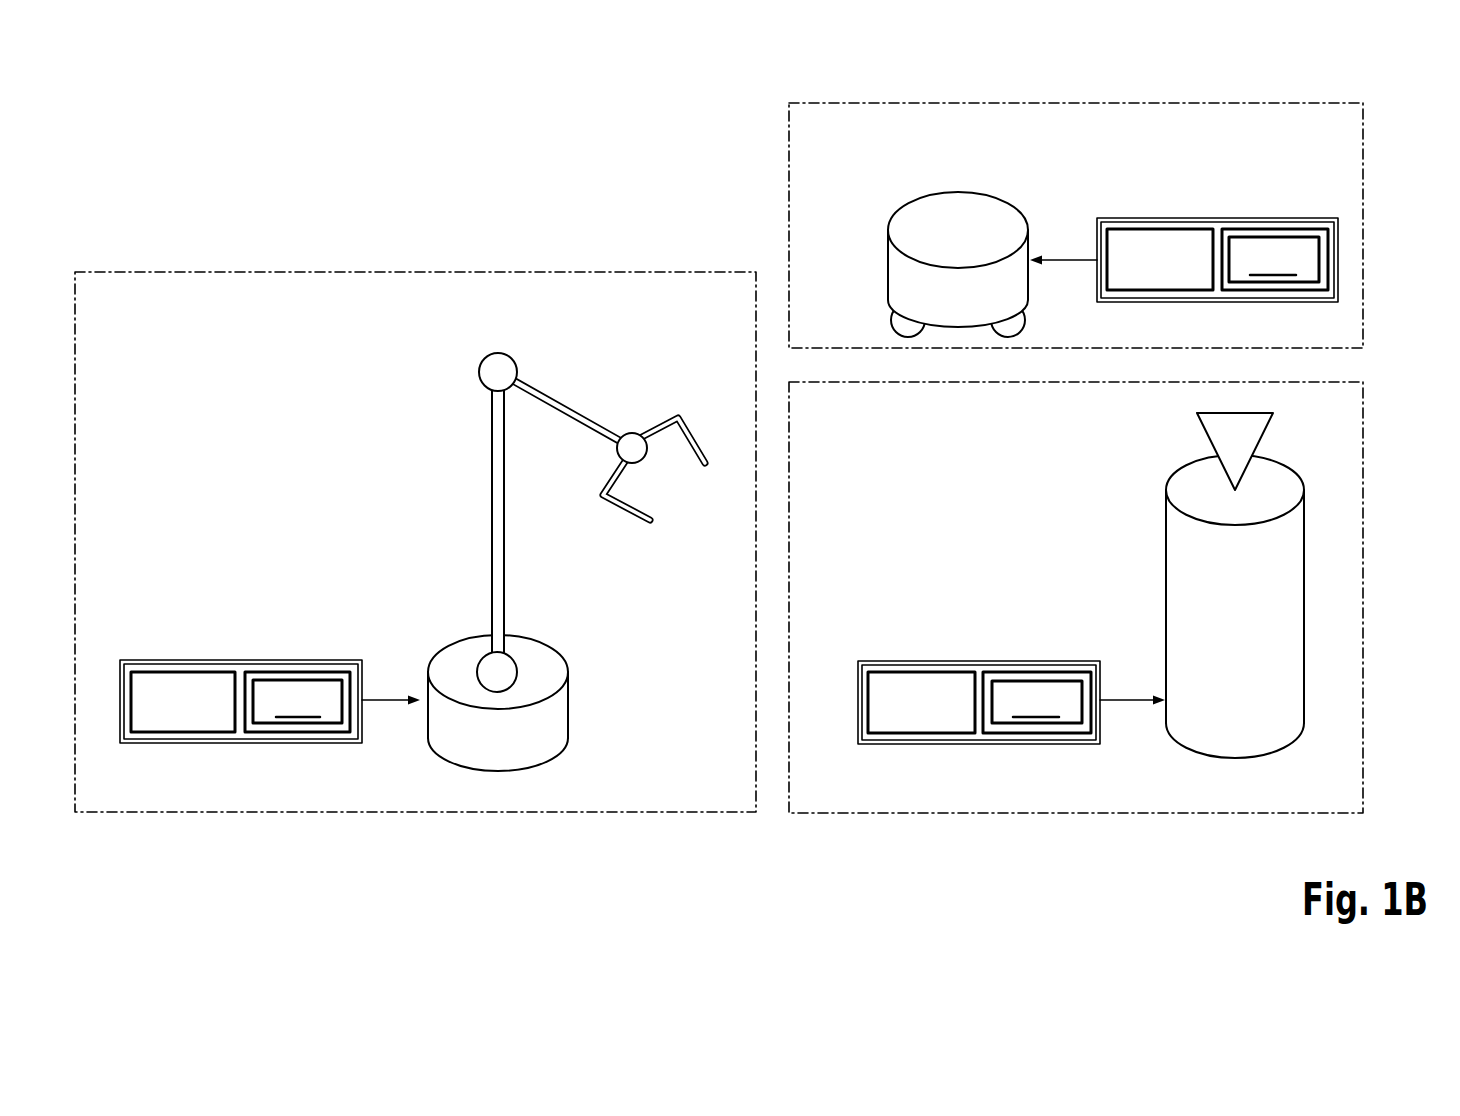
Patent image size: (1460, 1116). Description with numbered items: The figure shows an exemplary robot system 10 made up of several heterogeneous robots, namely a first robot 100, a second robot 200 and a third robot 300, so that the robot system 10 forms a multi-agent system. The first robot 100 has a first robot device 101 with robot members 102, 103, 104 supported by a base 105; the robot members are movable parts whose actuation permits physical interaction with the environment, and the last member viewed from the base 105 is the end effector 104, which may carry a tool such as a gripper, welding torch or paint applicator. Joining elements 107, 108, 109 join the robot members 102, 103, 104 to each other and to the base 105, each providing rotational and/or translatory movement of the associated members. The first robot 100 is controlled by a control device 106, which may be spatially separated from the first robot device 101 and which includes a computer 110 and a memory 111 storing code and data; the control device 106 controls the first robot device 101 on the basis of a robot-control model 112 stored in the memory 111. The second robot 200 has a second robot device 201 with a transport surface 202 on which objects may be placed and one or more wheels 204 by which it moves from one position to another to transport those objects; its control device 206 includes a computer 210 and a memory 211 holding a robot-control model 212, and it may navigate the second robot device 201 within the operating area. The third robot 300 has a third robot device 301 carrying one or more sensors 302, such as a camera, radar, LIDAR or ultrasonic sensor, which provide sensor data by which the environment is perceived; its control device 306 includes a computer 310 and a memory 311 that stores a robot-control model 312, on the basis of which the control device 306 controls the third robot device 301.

The robot system 10 is at (256, 130).
The first robot 100 is at (430, 272).
The first robot device 101 is at (464, 496).
The robot member 102 is at (505, 598).
The robot member 103 is at (562, 410).
The end effector 104 is at (693, 438).
The base 105 is at (558, 717).
The control device 106 is at (272, 692).
The joining element 107 is at (507, 673).
The joining element 108 is at (479, 372).
The joining element 109 is at (634, 438).
The computer 110 is at (172, 672).
The memory 111 is at (335, 692).
The robot-control model 112 is at (328, 713).
The second robot 200 is at (1368, 207).
The second robot device 201 is at (899, 162).
The transport surface 202 is at (973, 222).
The wheels 204 is at (893, 320).
The control device 206 is at (1193, 245).
The computer 210 is at (1148, 229).
The memory 211 is at (1289, 245).
The robot-control model 212 is at (1302, 267).
The third robot 300 is at (1368, 603).
The third robot device 301 is at (902, 442).
The sensors 302 is at (1245, 437).
The control device 306 is at (1011, 693).
The computer 310 is at (910, 672).
The memory 311 is at (1058, 693).
The robot-control model 312 is at (1057, 736).